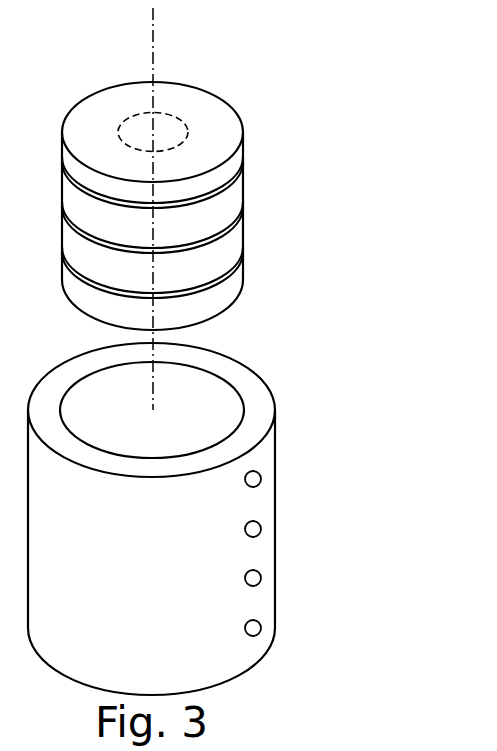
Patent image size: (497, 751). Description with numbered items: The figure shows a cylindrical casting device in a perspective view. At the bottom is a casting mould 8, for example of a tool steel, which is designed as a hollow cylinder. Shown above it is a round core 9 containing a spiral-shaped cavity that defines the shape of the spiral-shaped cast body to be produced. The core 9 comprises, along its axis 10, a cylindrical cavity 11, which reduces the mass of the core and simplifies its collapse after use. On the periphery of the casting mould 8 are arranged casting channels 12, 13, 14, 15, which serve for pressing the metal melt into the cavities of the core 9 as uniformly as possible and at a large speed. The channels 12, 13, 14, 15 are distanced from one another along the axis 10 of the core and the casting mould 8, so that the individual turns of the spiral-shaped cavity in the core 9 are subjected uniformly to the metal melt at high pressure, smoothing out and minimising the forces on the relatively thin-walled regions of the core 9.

The casting mould 8 is at (275, 438).
The round core 9 is at (237, 190).
The axis 10 is at (153, 62).
The cylindrical cavity 11 is at (168, 128).
The casting channel 12 is at (261, 479).
The casting channel 13 is at (261, 529).
The casting channel 14 is at (261, 578).
The casting channel 15 is at (261, 628).